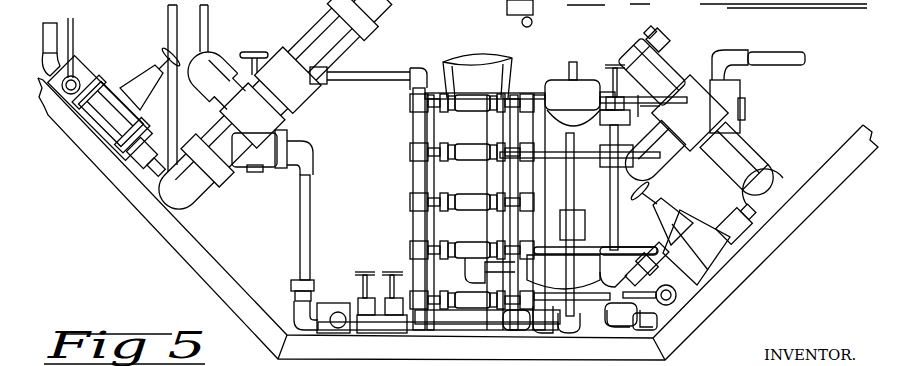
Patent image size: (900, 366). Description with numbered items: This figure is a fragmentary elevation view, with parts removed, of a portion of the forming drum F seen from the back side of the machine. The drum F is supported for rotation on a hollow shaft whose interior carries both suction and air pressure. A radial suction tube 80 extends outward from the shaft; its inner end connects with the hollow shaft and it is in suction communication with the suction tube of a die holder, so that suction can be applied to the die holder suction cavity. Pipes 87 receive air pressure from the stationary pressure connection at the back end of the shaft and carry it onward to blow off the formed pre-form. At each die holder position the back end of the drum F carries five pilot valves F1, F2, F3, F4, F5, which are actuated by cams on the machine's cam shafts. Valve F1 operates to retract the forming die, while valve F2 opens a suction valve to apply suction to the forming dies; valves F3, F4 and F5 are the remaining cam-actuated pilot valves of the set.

The pipes 87 is at (312, 26).
The radial suction tube 80 is at (505, 75).
The pilot valve F1 is at (473, 100).
The pilot valve F2 is at (468, 152).
The pilot valve F3 is at (468, 203).
The pilot valve F4 is at (468, 250).
The pilot valve F5 is at (463, 294).
The forming drum F is at (126, 239).